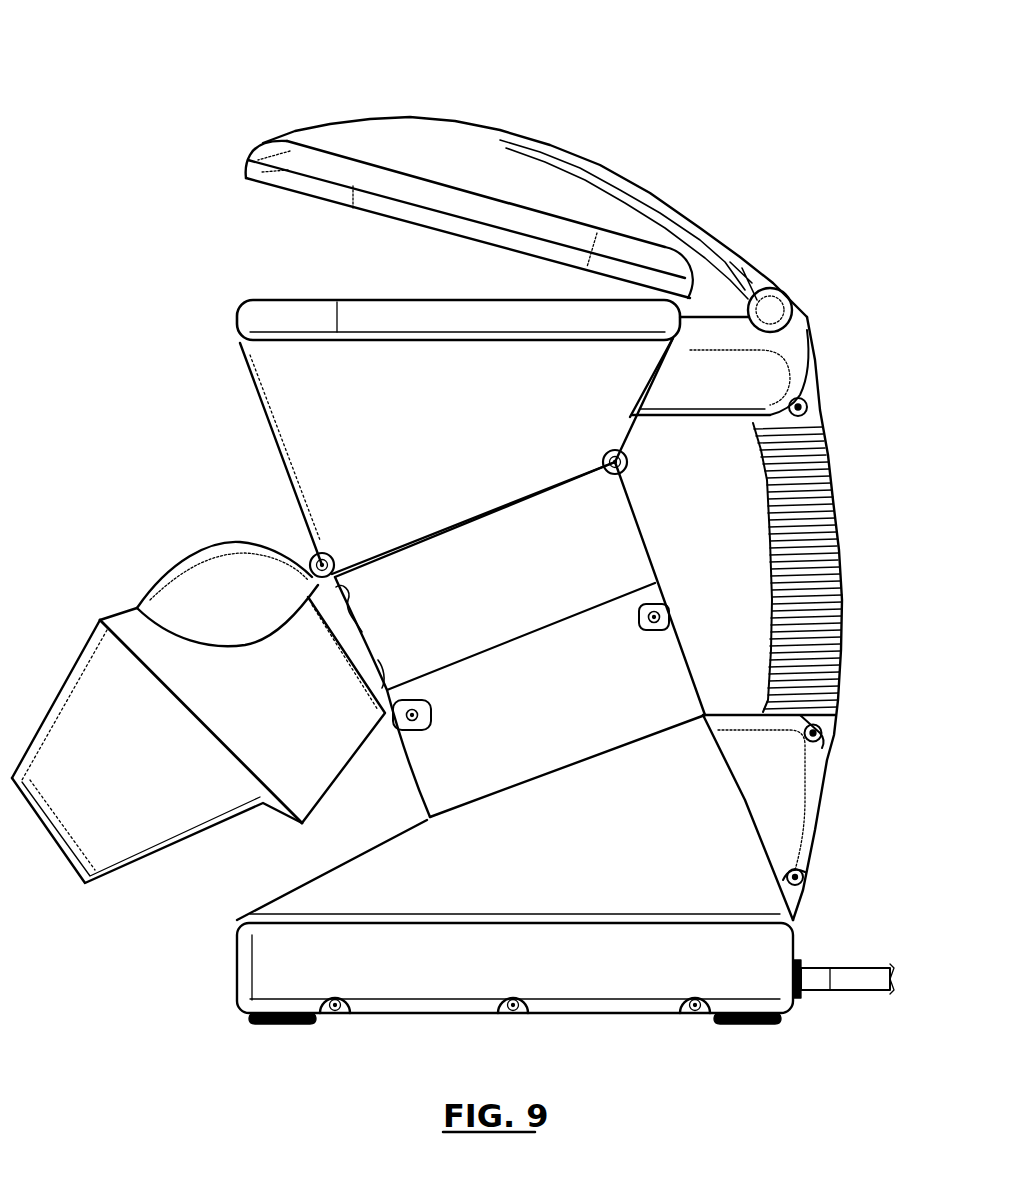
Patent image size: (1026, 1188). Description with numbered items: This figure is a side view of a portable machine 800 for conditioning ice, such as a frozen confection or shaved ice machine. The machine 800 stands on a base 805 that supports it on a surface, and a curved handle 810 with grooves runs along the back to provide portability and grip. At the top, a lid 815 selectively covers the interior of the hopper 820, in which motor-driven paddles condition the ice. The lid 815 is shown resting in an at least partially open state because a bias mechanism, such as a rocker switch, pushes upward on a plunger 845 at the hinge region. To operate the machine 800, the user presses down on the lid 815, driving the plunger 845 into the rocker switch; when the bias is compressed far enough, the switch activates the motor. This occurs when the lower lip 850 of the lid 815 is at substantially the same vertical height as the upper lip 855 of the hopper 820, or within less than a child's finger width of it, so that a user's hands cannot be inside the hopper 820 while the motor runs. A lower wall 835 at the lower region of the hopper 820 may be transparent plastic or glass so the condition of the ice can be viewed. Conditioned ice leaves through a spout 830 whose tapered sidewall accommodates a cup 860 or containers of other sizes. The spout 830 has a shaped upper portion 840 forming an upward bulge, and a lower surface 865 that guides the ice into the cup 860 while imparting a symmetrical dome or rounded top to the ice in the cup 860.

The machine 800 is at (190, 74).
The base 805 is at (255, 962).
The handle 810 is at (833, 500).
The lid 815 is at (478, 134).
The hopper 820 is at (290, 440).
The spout 830 is at (137, 620).
The lower wall 835 is at (626, 547).
The shaped upper portion 840 is at (263, 565).
The plunger 845 is at (697, 313).
The lower lip 850 is at (245, 178).
The upper lip 855 is at (262, 298).
The cup 860 is at (143, 843).
The lower surface 865 is at (323, 782).